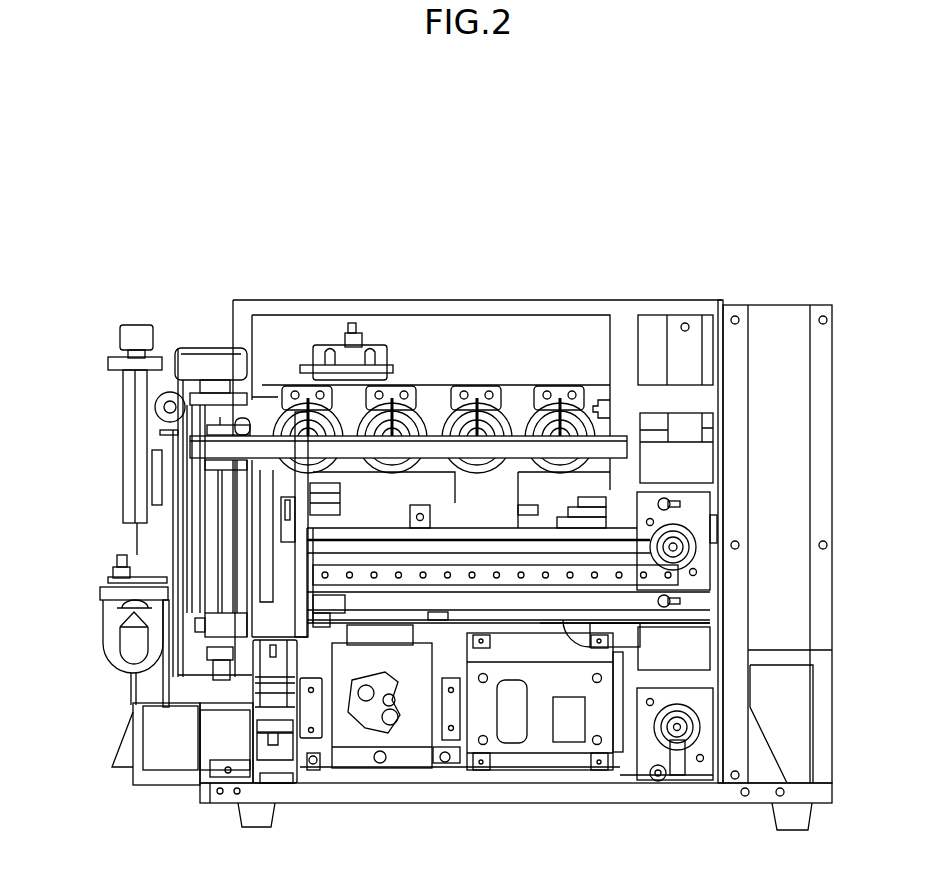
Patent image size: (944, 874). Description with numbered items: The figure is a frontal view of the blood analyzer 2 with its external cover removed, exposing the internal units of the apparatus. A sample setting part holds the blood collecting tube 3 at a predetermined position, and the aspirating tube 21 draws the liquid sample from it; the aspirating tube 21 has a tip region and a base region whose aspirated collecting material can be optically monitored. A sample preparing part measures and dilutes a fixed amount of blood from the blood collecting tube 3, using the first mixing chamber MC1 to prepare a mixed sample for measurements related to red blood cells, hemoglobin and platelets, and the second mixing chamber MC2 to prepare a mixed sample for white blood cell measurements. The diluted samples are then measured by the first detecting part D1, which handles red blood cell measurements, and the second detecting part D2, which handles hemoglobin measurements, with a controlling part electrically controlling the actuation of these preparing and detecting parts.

The blood analyzer 2 is at (553, 268).
The aspirating tube 21 is at (220, 525).
The blood collecting tube 3 is at (220, 677).
The second detecting part D2 is at (175, 755).
The first mixing chamber MC1 is at (280, 705).
The first detecting part D1 is at (360, 720).
The second mixing chamber MC2 is at (513, 732).